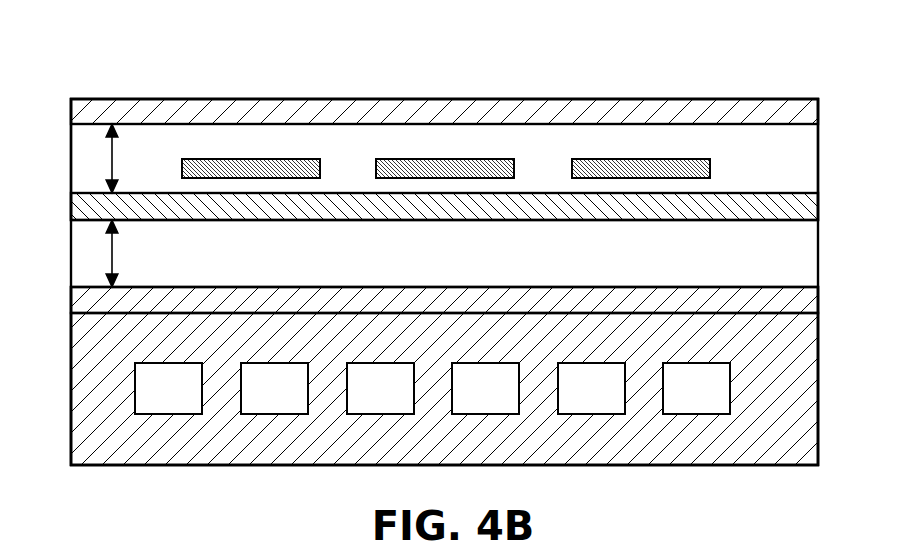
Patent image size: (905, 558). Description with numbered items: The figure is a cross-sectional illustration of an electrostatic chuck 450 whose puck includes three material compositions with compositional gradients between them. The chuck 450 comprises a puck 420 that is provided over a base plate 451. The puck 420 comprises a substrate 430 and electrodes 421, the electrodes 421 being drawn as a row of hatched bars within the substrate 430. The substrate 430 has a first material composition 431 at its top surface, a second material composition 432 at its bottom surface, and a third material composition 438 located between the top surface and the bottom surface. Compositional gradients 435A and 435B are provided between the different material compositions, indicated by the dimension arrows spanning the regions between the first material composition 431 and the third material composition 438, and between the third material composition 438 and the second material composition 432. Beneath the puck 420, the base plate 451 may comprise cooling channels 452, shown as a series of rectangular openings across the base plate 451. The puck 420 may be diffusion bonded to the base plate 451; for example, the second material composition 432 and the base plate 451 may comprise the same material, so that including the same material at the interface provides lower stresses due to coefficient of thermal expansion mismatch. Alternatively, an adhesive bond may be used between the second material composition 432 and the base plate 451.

The puck 420 is at (660, 73).
The electrodes 421 is at (448, 158).
The substrate 430 is at (767, 146).
The first material composition 431 is at (165, 111).
The second material composition 432 is at (225, 295).
The compositional gradient 435A is at (112, 152).
The compositional gradient 435B is at (112, 242).
The third material composition 438 is at (252, 205).
The chuck 450 is at (822, 99).
The base plate 451 is at (758, 447).
The cooling channels 452 is at (692, 395).